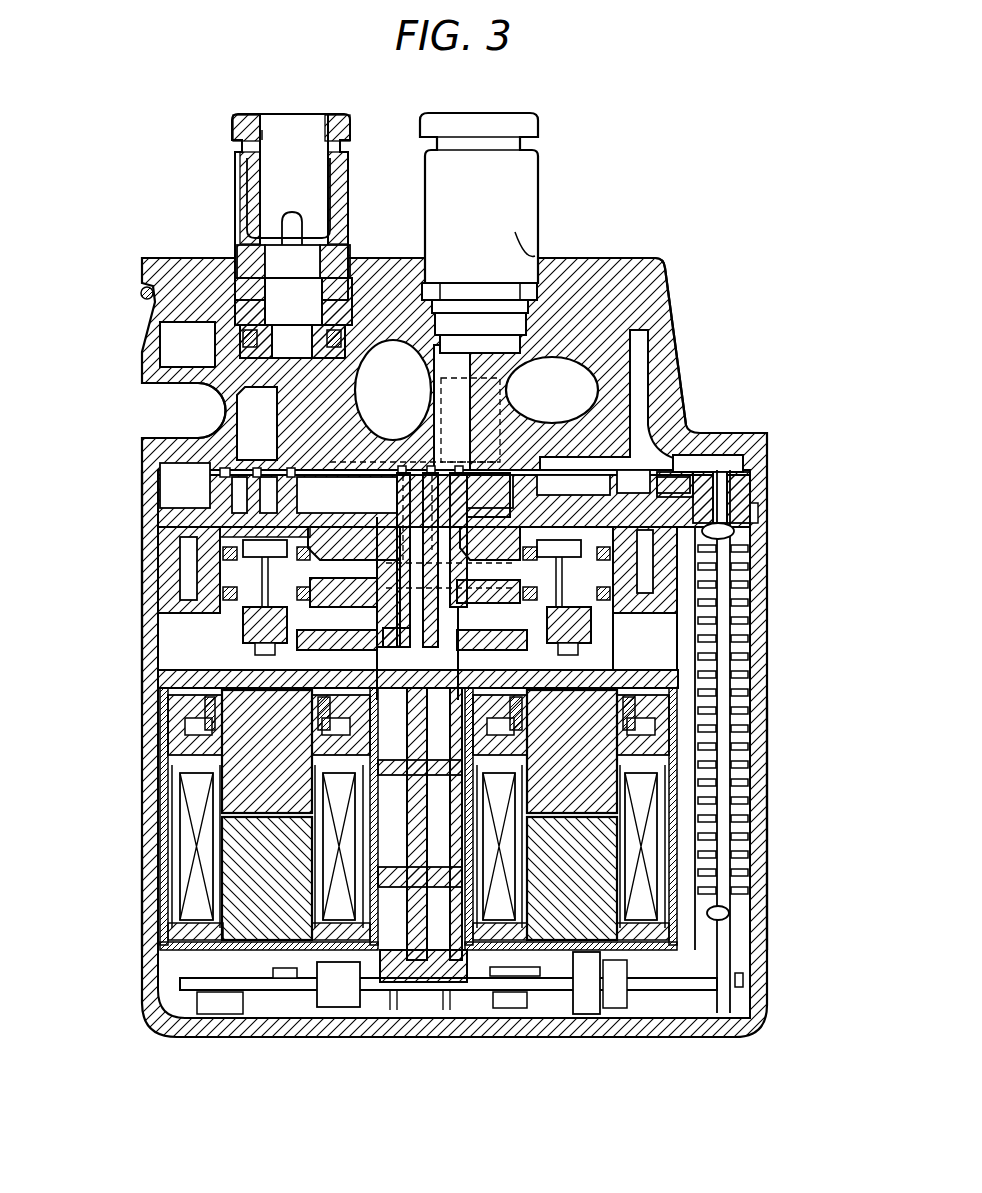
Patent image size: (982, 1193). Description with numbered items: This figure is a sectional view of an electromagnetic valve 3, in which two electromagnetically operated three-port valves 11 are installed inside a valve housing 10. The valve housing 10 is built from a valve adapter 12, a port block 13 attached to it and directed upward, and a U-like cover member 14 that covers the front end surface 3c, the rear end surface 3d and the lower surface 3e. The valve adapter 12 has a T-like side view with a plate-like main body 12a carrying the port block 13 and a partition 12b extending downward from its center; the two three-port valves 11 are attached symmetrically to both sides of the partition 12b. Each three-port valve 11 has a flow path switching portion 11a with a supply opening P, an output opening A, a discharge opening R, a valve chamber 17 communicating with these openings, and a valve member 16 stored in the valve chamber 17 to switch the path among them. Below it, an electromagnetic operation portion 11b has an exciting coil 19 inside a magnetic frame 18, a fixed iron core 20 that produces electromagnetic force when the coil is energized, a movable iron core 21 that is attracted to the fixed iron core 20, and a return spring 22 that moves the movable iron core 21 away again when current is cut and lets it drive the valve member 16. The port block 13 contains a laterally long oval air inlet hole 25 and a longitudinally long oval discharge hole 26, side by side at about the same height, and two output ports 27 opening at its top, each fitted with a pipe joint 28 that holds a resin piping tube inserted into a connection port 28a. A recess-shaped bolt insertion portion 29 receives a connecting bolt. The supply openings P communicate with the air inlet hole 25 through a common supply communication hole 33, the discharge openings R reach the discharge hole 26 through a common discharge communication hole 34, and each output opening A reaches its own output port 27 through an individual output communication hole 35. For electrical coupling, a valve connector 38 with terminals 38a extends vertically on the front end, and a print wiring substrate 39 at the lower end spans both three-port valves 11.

The electromagnetic valve 3 is at (720, 288).
The valve housing 10 is at (710, 366).
The port block 13 is at (660, 270).
The bolt insertion portion 29 is at (165, 436).
The discharge hole 26 is at (408, 405).
The air inlet hole 25 is at (564, 405).
The output communication hole 35 is at (470, 404).
The supply communication hole 33 is at (425, 478).
The pipe joint 28 is at (232, 168).
The connection port 28a is at (263, 132).
The output port 27 is at (237, 270).
The main body 12a is at (683, 463).
The valve adapter 12 is at (737, 492).
The valve chamber 17 is at (238, 625).
The discharge communication hole 34 is at (412, 665).
The valve member 16 is at (250, 633).
The three-port valve 11 is at (264, 968).
The return spring 22 is at (185, 725).
The movable iron core 21 is at (265, 775).
The fixed iron core 20 is at (262, 920).
The magnetic frame 18 is at (200, 812).
The exciting coil 19 is at (195, 857).
The valve connector 38 is at (760, 674).
The terminal 38a is at (748, 762).
The print wiring substrate 39 is at (648, 980).
The partition 12b is at (427, 972).
The cover member 14 is at (337, 1040).
The lower surface 3e is at (485, 1040).
The front end surface 3c is at (770, 825).
The rear end surface 3d is at (155, 888).
The electromagnetic operation portion 11b is at (150, 921).
The flow path switching portion 11a is at (150, 566).